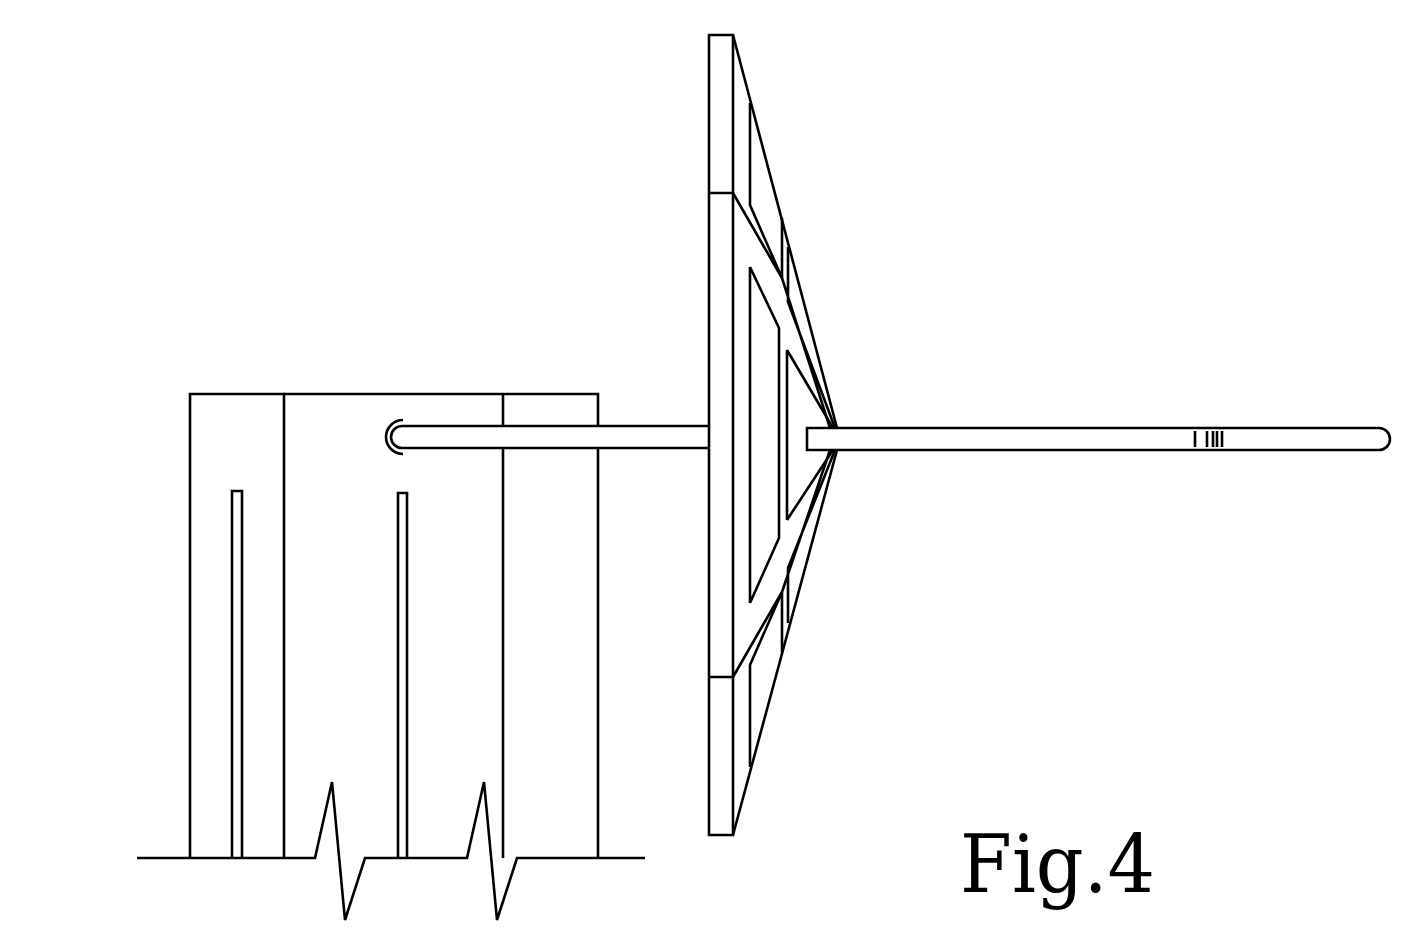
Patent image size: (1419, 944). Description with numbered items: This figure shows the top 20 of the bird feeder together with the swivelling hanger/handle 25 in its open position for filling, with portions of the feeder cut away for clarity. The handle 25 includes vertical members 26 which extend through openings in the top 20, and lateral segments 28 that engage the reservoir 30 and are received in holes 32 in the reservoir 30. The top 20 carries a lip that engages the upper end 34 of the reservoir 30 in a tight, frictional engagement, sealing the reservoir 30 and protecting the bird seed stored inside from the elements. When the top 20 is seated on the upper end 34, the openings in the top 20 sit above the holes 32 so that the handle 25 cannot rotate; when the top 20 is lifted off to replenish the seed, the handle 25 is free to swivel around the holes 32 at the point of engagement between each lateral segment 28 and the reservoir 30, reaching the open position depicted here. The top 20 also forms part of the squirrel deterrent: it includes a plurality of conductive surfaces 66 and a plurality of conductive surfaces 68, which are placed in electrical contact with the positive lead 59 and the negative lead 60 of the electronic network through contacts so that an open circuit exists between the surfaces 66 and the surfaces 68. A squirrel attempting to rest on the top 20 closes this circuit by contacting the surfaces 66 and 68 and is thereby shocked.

The top 20 is at (733, 780).
The swivelling hanger/handle 25 is at (1217, 416).
The vertical members 26 is at (973, 420).
The lateral segments 28 is at (383, 437).
The reservoir 30 is at (180, 719).
The holes 32 is at (393, 420).
The upper end 34 is at (237, 403).
The positive lead 59 is at (400, 555).
The negative lead 60 is at (232, 495).
The conductive surfaces 66 is at (762, 183).
The conductive surfaces 68 is at (797, 305).